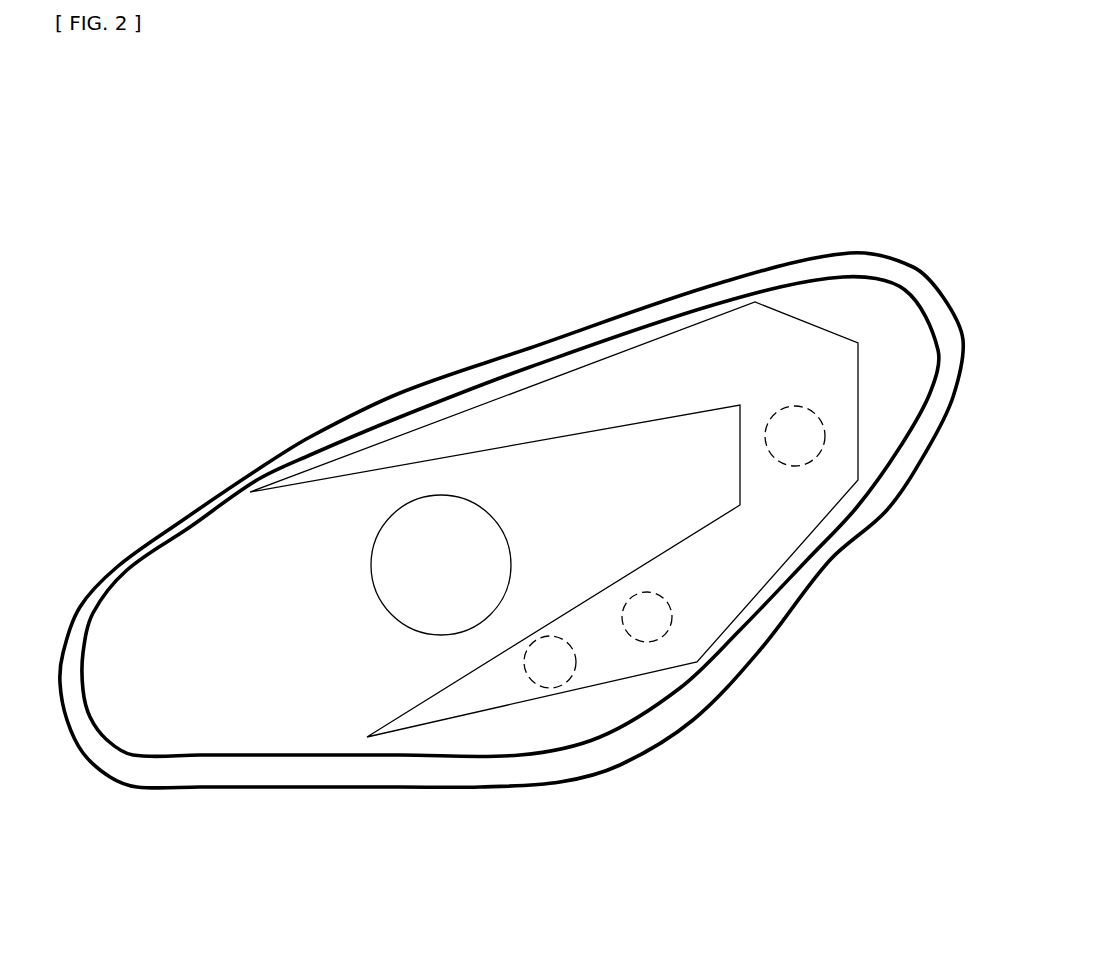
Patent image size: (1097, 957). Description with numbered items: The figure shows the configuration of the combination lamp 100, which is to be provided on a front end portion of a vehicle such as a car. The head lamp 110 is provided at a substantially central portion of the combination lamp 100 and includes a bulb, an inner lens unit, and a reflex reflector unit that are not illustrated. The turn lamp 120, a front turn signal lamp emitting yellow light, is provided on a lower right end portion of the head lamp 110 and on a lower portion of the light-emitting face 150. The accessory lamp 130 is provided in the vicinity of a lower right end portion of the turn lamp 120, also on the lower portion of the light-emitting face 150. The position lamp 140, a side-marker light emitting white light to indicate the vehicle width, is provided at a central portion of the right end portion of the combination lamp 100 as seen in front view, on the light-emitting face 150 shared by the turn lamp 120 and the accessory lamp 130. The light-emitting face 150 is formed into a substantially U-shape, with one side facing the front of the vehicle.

The combination lamp 100 is at (928, 136).
The head lamp 110 is at (377, 535).
The turn lamp 120 is at (565, 680).
The accessory lamp 130 is at (665, 633).
The position lamp 140 is at (815, 462).
The light-emitting face 150 is at (585, 393).